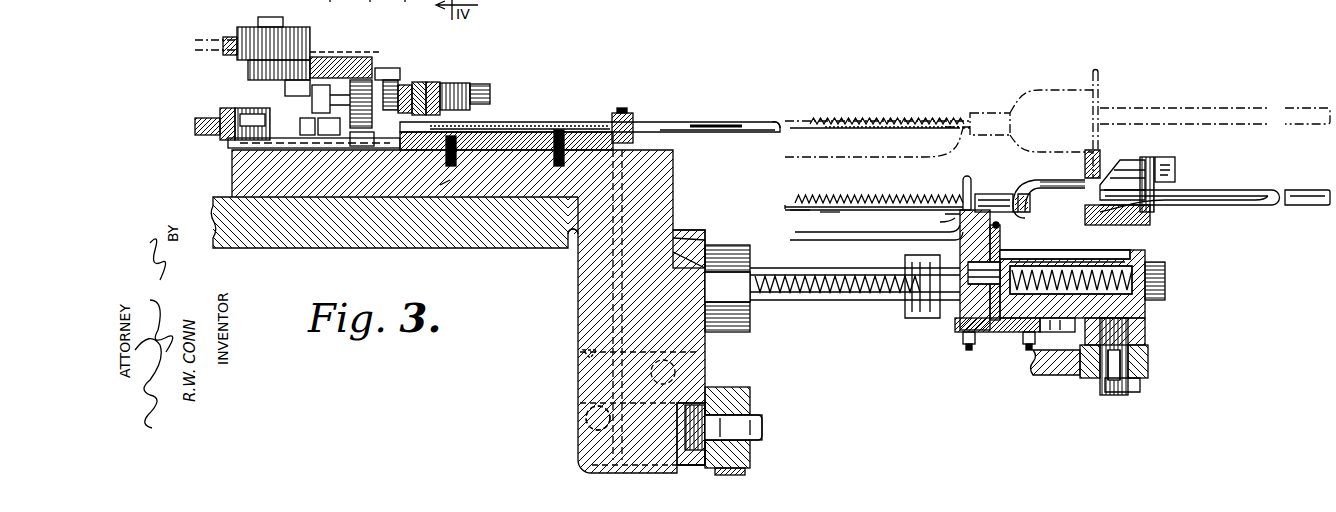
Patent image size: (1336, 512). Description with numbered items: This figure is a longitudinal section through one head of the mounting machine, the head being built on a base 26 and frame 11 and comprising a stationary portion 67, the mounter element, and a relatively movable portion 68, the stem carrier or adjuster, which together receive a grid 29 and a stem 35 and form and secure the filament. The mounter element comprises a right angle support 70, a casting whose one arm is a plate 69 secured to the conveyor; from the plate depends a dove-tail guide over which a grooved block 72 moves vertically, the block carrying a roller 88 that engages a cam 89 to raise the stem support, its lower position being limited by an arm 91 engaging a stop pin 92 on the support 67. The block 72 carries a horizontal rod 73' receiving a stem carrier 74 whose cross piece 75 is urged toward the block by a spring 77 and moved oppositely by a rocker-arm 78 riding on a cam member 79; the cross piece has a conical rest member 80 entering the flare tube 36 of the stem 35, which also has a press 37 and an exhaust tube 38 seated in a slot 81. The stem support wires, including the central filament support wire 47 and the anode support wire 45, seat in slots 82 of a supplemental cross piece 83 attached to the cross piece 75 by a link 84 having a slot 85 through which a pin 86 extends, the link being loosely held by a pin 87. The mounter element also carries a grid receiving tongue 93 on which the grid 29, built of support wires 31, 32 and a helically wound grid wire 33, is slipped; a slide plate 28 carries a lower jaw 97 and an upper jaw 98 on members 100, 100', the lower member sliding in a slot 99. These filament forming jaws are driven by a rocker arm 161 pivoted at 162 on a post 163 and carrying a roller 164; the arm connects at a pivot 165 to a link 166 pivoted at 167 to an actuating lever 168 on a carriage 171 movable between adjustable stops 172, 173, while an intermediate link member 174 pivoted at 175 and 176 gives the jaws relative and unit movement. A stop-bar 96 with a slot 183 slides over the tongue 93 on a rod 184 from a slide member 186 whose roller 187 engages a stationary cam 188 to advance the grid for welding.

The base block 26 is at (283, 267).
The stationary portion 67 is at (587, 309).
The right angle support 70 is at (571, 253).
The arm 91 is at (582, 360).
The stop pin 92 is at (584, 428).
The grooved block 72 is at (688, 231).
The relatively movable portion 68 is at (742, 325).
The roller 88 is at (748, 390).
The cam 89 is at (744, 472).
The slide plate 28 is at (677, 151).
The grid receiving member or tongue 93 is at (748, 134).
The member 100 is at (520, 112).
The lower or carrier member 100' is at (530, 106).
The stop-bar 96 is at (630, 125).
The aperture or slot 183 is at (622, 116).
The upper jaw 98 is at (697, 128).
The lower jaw 97 is at (717, 130).
The slot 99 is at (747, 130).
The roller 164 is at (252, 44).
The rocker arm 161 is at (254, 68).
The link 166 is at (333, 57).
The pivot 165 is at (292, 96).
The carriage 171 is at (348, 116).
The adjustable stop 173 is at (378, 90).
The pivot 167 is at (395, 82).
The pivot 175 is at (408, 95).
The actuating lever 168 is at (420, 92).
The adjustable stop 172 is at (434, 95).
The intermediate link member 174 is at (452, 86).
The pivot 176 is at (480, 86).
The roller 187 is at (226, 112).
The stationary cam 188 is at (196, 126).
The slide member 186 is at (232, 147).
The rod 184 is at (362, 146).
The plate 69 is at (445, 186).
The pivot 162 is at (333, 5).
The post 163 is at (375, 5).
The frame 11 is at (408, 5).
The stem 35 is at (1062, 78).
The grid 29 is at (840, 116).
The support wire 32 is at (800, 190).
The support wire 31 is at (800, 209).
The grid wire 33 is at (832, 212).
The central filament support wire 47 is at (828, 233).
The supplemental cross piece 83 is at (962, 240).
The slot 82 is at (955, 221).
The plate or anode support wire 45 is at (958, 202).
The press 37 is at (990, 194).
The flare tube 36 is at (1042, 180).
The conical rest member 80 is at (1102, 168).
The exhaust tube 38 is at (1198, 192).
The slot 81 is at (1150, 215).
The rod 73' is at (855, 294).
The spring 77 is at (802, 275).
The stem carrier 74 is at (996, 348).
The link 84 is at (1006, 332).
The pin 87 is at (966, 342).
The slot 85 is at (1032, 344).
The pin 86 is at (1045, 326).
The cross piece 75 is at (1046, 252).
The rocker-arm 78 is at (1142, 360).
The cam member 79 is at (1055, 376).